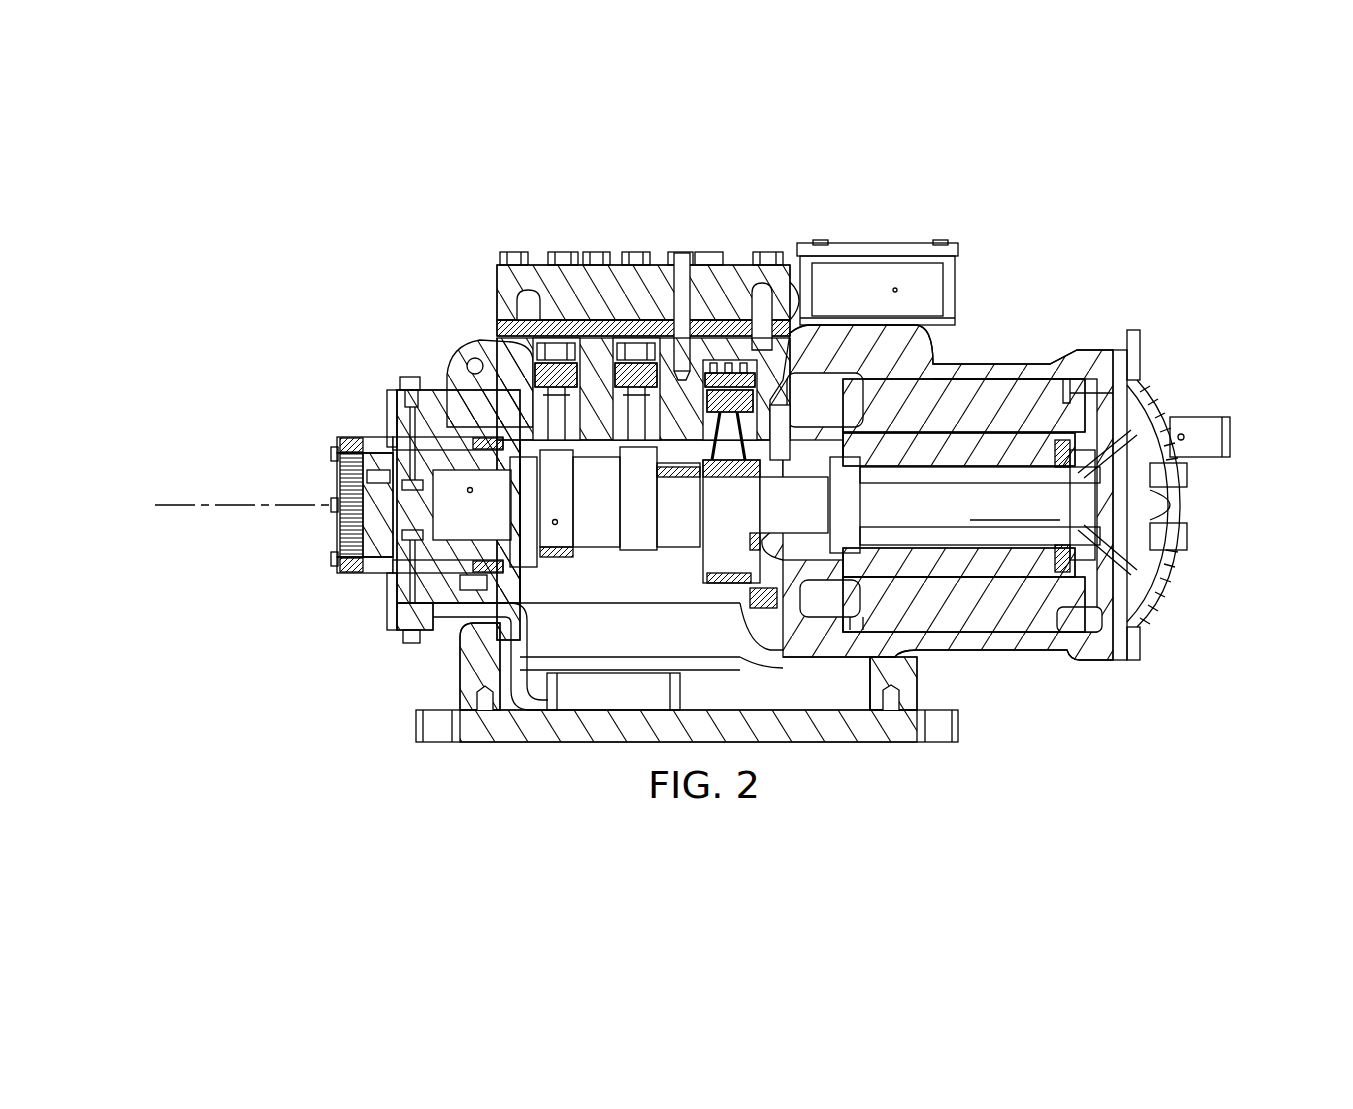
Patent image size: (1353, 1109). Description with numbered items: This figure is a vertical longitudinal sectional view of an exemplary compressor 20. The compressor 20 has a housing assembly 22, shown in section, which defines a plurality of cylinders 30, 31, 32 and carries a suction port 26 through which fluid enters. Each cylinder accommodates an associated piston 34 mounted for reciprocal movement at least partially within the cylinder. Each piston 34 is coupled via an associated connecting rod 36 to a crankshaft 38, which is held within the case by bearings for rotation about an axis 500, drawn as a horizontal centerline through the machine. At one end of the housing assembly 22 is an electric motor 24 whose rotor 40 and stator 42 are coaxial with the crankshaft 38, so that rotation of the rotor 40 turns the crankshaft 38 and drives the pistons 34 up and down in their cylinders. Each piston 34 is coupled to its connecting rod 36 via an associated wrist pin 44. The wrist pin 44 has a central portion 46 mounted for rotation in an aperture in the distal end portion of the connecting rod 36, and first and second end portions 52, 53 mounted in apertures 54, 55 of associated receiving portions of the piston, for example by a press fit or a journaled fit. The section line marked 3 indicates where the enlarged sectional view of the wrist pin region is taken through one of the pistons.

The compressor 20 is at (1032, 262).
The housing assembly 22 is at (1085, 322).
The electric motor 24 is at (1075, 415).
The suction port 26 is at (1215, 510).
The cylinder 30 is at (700, 350).
The cylinder 31 is at (572, 340).
The cylinder 32 is at (548, 345).
The piston 34 is at (522, 348).
The connecting rod 36 is at (712, 452).
The crankshaft 38 is at (690, 525).
The rotor 40 is at (1040, 452).
The stator 42 is at (1025, 405).
The wrist pin 44 is at (545, 382).
The central portion 46 is at (729, 440).
The first end portion 52 is at (603, 438).
The second end portion 53 is at (658, 325).
The aperture 54 is at (540, 372).
The aperture 55 is at (765, 305).
The axis 500 is at (214, 500).
The section line 3- 3 is at (636, 335).